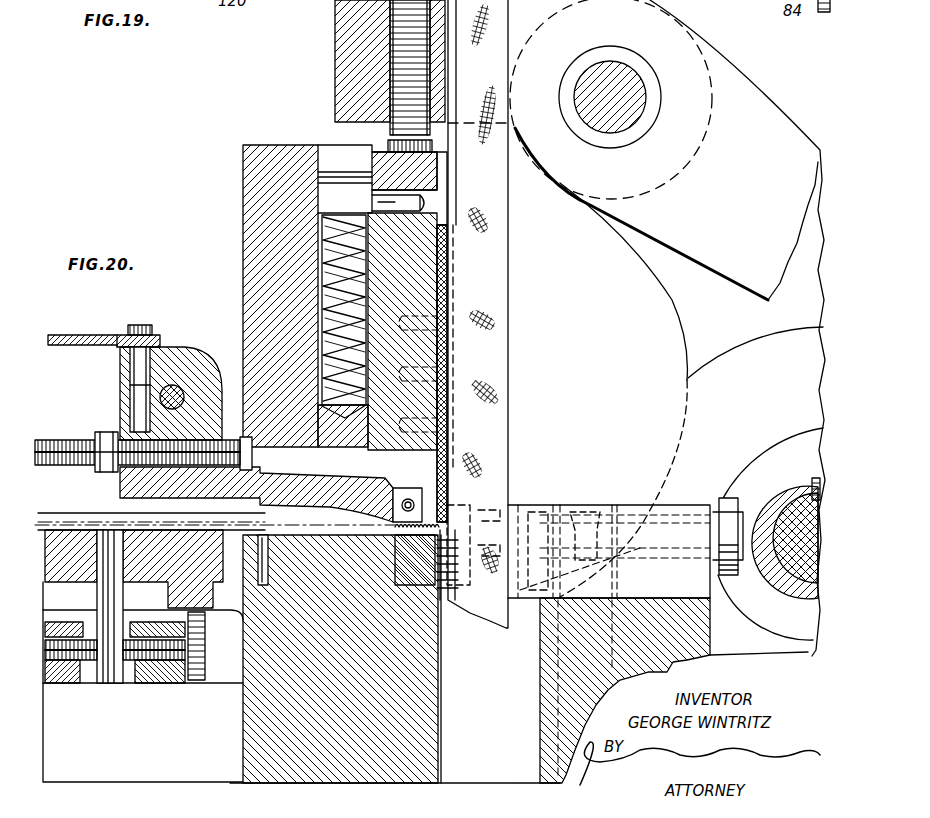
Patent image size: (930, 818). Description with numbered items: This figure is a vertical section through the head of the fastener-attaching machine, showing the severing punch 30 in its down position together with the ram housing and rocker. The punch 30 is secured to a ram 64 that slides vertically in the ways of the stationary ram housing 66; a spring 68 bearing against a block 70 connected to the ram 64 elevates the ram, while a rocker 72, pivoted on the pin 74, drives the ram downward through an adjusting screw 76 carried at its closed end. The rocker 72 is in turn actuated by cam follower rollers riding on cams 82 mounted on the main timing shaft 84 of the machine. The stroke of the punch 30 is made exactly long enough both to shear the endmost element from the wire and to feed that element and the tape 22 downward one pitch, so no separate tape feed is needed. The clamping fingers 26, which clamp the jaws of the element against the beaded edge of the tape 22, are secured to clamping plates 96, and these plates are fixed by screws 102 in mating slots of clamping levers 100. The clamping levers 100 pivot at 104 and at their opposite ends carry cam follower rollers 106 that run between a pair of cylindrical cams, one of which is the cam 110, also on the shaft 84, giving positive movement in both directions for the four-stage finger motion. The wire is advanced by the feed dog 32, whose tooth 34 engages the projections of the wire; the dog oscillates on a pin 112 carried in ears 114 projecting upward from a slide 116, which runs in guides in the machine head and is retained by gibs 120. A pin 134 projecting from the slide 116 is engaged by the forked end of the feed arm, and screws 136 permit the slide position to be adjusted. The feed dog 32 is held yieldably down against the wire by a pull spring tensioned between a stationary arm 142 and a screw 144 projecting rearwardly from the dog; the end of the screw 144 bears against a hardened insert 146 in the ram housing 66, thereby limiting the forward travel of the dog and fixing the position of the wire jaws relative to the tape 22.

The tape 22 is at (493, 436).
The clamping fingers 26 is at (470, 530).
The severing punch 30 is at (448, 527).
The feed dog 32 is at (289, 498).
The tooth 34 is at (408, 492).
The ram 64 is at (410, 290).
The ram housing 66 is at (256, 172).
The spring 68 is at (325, 255).
The block 70 is at (355, 195).
The rocker 72 is at (553, 176).
The pin 74 is at (628, 78).
The adjusting screw 76 is at (405, 40).
The cams 82 is at (752, 356).
The main timing shaft 84 is at (800, 560).
The clamping plates 96 is at (470, 537).
The clamping levers 100 is at (608, 535).
The screws 102 is at (540, 525).
The pivot 104 is at (582, 508).
The cam follower rollers 106 is at (727, 515).
The cylindrical cam 110 is at (772, 456).
The pin 112 is at (180, 387).
The ears 114 is at (170, 356).
The slide 116 is at (70, 555).
The gibs 120 is at (86, 513).
The pin 134 is at (110, 683).
The screws 136 is at (197, 680).
The stationary arm 142 is at (76, 346).
The screw 144 is at (66, 434).
The hardened insert 146 is at (245, 440).